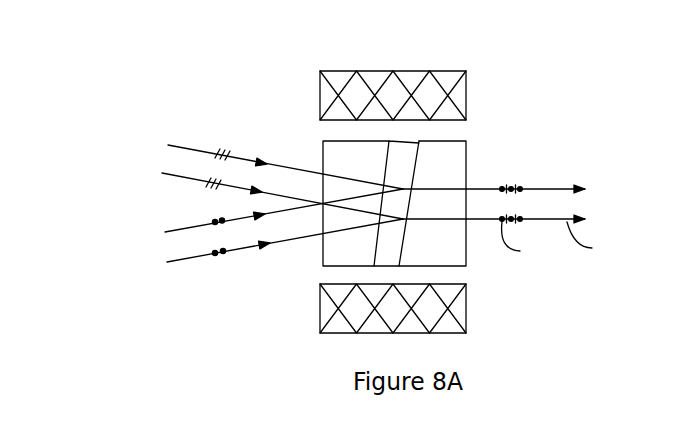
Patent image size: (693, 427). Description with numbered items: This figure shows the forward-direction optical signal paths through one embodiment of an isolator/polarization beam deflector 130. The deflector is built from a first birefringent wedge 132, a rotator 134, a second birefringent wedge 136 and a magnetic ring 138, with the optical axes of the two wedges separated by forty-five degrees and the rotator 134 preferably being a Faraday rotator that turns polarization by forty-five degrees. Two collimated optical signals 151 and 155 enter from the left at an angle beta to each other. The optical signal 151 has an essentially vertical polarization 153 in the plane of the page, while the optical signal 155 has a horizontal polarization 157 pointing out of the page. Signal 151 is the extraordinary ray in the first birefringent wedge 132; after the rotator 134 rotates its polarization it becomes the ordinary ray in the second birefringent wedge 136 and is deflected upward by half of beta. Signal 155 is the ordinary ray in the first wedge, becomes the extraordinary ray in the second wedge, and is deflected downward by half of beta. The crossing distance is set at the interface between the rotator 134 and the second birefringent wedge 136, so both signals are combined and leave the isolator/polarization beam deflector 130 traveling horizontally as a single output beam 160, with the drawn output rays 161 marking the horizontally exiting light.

The isolator/polarization beam deflector 130 is at (412, 36).
The first birefringent wedge 132 is at (322, 142).
The rotator 134 is at (374, 264).
The second birefringent wedge 136 is at (467, 147).
The magnetic ring 138 is at (467, 90).
The optical signal 151 is at (160, 175).
The polarization 153 is at (231, 157).
The optical signal 155 is at (140, 265).
The polarization 157 is at (213, 222).
The beam 160 is at (590, 219).
The output beams 161 is at (521, 187).